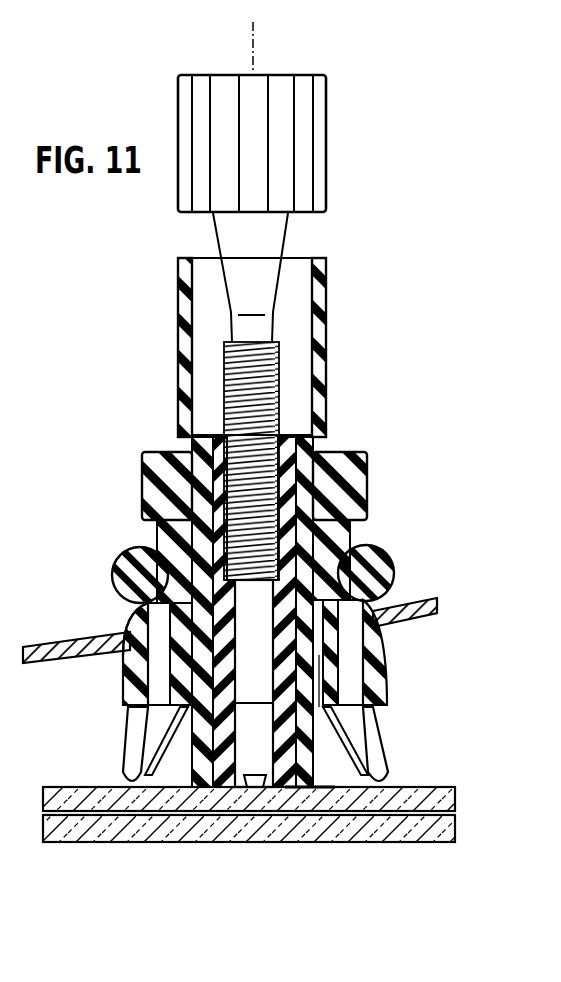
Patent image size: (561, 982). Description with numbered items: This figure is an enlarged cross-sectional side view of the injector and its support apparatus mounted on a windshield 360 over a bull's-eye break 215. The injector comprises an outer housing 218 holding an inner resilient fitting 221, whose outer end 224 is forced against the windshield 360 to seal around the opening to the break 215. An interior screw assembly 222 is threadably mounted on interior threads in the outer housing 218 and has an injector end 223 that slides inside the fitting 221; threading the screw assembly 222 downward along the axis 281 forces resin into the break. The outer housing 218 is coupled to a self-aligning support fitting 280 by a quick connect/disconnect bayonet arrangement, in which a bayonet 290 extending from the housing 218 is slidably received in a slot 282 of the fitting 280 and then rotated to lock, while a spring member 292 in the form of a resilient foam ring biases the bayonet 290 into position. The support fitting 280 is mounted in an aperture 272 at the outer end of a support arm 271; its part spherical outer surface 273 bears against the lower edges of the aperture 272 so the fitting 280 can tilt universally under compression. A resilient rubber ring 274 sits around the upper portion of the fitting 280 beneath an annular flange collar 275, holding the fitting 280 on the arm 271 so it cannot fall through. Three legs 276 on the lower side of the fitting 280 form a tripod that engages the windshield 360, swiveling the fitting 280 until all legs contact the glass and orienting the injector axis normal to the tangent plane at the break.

The axis 281 is at (253, 32).
The interior screw assembly 222 is at (326, 130).
The outer housing 218 is at (325, 292).
The spring member 292 is at (358, 452).
The annular flange collar 275 is at (348, 533).
The resilient ring 274 is at (392, 563).
The support fitting 280 is at (387, 653).
The support arm 271 is at (57, 660).
The aperture 272 is at (133, 635).
The part spherical outer surface 273 is at (425, 620).
The legs 276 is at (127, 742).
The slot 282 is at (323, 723).
The bayonet 290 is at (182, 745).
The outer end 224 is at (250, 712).
The injector end 223 is at (260, 787).
The inner resilient fitting 221 is at (293, 788).
The bull's-eye break 215 is at (302, 843).
The windshield 360 is at (440, 787).